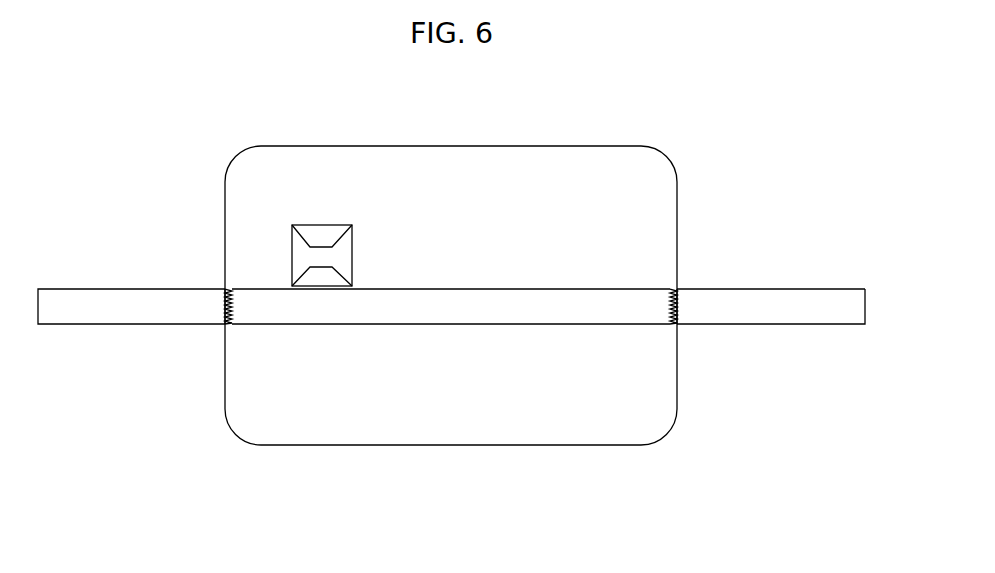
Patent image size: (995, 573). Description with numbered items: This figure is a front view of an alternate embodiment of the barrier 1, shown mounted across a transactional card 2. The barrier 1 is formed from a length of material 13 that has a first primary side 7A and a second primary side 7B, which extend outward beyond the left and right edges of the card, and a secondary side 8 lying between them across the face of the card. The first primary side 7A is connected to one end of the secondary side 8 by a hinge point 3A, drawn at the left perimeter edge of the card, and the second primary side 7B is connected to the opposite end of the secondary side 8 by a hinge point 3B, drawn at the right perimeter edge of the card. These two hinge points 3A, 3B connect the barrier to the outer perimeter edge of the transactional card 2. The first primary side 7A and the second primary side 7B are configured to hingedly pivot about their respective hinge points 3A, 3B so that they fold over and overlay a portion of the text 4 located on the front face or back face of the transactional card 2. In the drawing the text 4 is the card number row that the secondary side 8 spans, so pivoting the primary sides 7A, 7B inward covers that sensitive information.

The barrier 1 is at (451, 313).
The transactional card 2 is at (572, 147).
The hinge point 3A is at (224, 290).
The hinge point 3B is at (679, 321).
The text 4 is at (595, 302).
The first primary side 7A is at (133, 316).
The second primary side 7B is at (771, 308).
The secondary side 8 is at (645, 299).
The length of material 13 is at (760, 288).